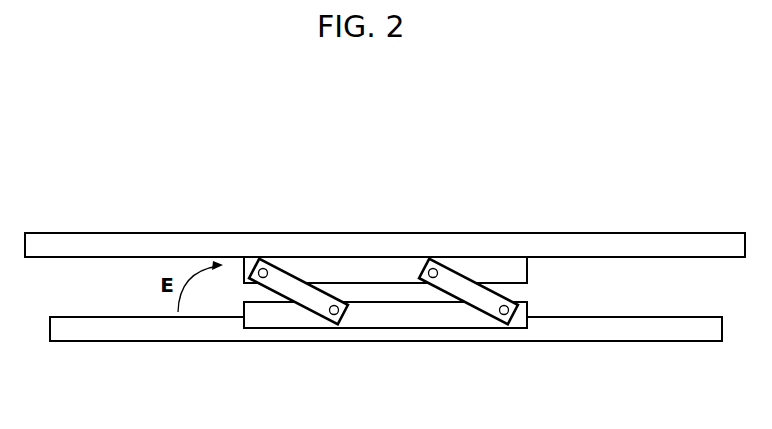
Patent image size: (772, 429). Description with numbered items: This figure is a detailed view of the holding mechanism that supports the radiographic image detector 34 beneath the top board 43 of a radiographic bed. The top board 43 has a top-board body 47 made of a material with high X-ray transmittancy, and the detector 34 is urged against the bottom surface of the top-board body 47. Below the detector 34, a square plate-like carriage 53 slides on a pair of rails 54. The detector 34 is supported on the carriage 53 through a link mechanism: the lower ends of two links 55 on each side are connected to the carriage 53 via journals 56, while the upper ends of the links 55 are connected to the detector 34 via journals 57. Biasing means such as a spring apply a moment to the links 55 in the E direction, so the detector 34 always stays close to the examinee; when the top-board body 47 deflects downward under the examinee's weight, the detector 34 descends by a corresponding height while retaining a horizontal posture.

The radiographic image detector 34 is at (371, 254).
The top board 43 is at (56, 231).
The top-board body 47 is at (129, 245).
The carriage 53 is at (403, 316).
The rails 54 is at (625, 336).
The links 55 is at (322, 290).
The journals 56 is at (336, 330).
The journals 57 is at (262, 268).